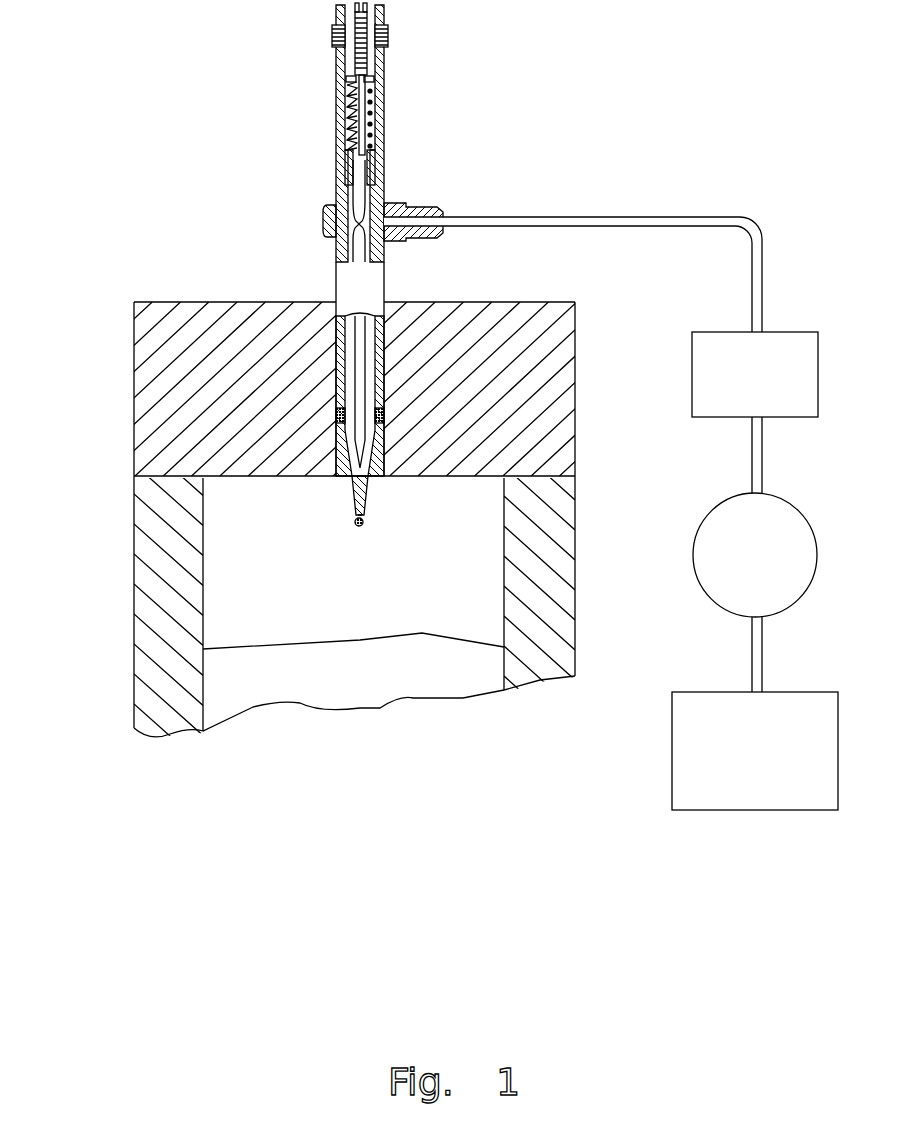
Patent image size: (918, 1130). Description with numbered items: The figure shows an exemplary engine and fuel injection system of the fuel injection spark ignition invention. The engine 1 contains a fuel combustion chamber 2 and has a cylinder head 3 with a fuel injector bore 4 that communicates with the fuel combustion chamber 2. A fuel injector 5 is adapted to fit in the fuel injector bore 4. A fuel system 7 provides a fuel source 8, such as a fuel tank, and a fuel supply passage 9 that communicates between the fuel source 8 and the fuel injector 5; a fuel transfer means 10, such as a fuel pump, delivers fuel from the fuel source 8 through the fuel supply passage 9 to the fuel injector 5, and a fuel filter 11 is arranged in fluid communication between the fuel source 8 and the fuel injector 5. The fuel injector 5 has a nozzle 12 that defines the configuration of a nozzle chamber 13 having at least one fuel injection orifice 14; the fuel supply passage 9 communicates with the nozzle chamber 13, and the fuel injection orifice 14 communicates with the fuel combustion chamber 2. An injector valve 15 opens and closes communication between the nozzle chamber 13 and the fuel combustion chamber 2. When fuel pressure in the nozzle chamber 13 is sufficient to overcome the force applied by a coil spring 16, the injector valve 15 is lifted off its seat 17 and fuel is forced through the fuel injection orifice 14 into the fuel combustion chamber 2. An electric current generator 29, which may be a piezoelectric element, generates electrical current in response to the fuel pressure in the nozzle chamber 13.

The engine 1 is at (387, 527).
The fuel combustion chamber 2 is at (227, 588).
The cylinder head 3 is at (134, 360).
The fuel injector bore 4 is at (335, 353).
The fuel injector 5 is at (357, 132).
The fuel system 7 is at (658, 513).
The fuel source 8 is at (715, 692).
The fuel supply passage 9 is at (752, 455).
The fuel transfer means 10 is at (697, 535).
The fuel filter 11 is at (692, 360).
The nozzle 12 is at (367, 490).
The nozzle chamber 13 is at (380, 357).
The fuel injection orifice 14 is at (350, 515).
The injector valve 15 is at (360, 390).
The coil spring 16 is at (350, 112).
The seat 17 is at (380, 477).
The electric current generator 29 is at (385, 418).